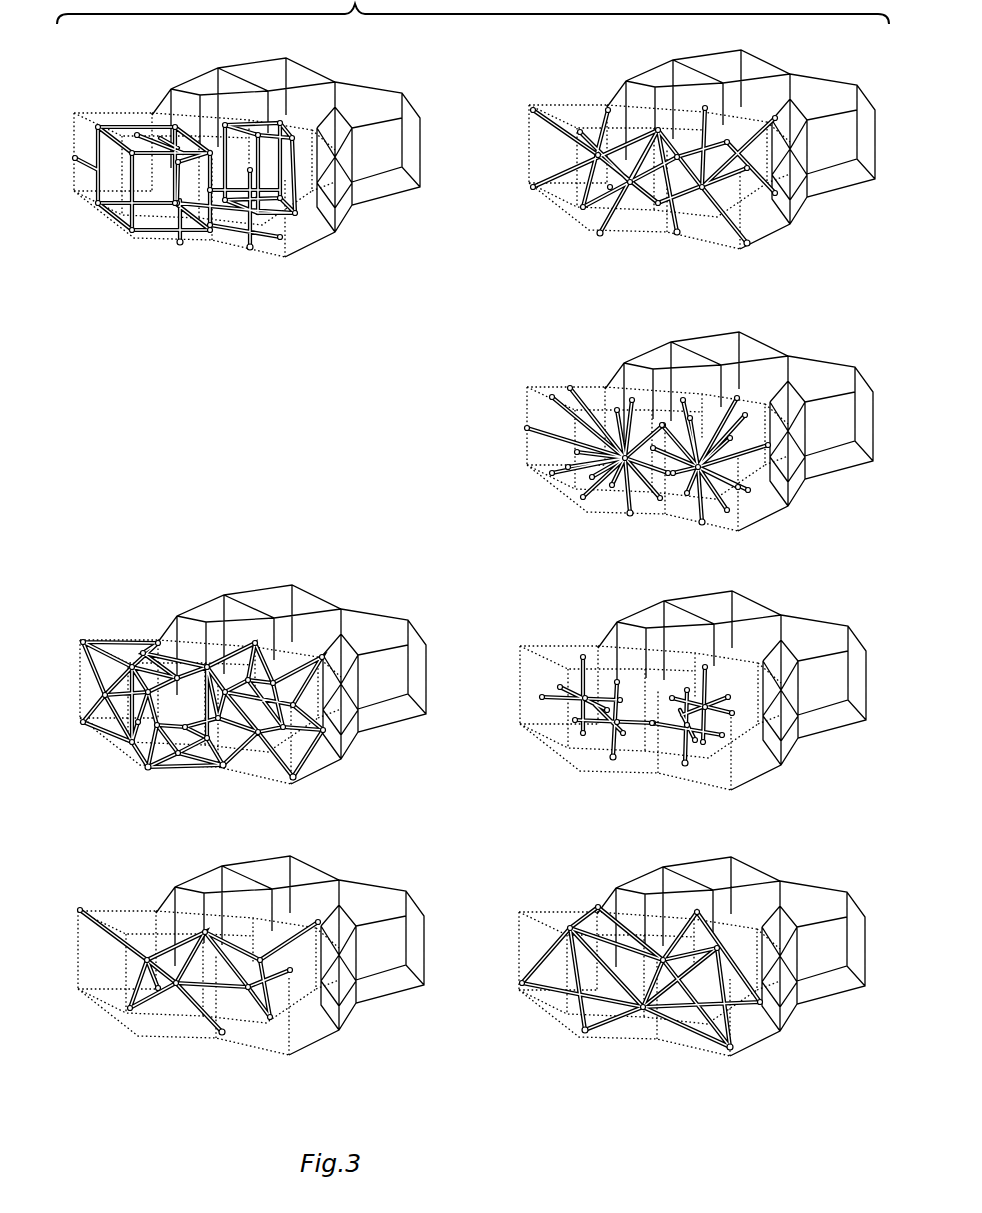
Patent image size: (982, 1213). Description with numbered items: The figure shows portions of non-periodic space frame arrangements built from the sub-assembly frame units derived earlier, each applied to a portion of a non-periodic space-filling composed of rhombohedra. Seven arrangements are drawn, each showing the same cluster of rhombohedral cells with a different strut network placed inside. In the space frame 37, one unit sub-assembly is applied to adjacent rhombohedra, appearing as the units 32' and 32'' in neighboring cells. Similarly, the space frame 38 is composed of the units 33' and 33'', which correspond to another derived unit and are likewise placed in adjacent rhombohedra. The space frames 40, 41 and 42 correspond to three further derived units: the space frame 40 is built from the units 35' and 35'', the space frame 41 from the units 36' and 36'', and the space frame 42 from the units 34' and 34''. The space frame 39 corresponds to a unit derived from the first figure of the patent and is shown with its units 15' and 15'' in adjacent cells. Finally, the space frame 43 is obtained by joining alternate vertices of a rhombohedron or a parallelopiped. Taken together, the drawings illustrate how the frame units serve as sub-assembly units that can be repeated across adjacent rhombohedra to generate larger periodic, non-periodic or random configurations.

The space frame 37 is at (232, 179).
The unit sub-assembly 32' is at (185, 153).
The unit sub-assembly 32'' is at (213, 247).
The space frame 40 is at (686, 182).
The unit sub-assembly 35' is at (654, 151).
The unit sub-assembly 35'' is at (673, 251).
The space frame 41 is at (681, 456).
The unit sub-assembly 36' is at (648, 430).
The unit sub-assembly 36'' is at (646, 535).
The space frame 38 is at (236, 714).
The unit sub-assembly 33' is at (203, 685).
The unit sub-assembly 33'' is at (220, 790).
The space frame 42 is at (674, 717).
The unit sub-assembly 34' is at (637, 685).
The unit sub-assembly 34'' is at (649, 785).
The space frame 39 is at (236, 977).
The unit sub-assembly 15' is at (199, 950).
The unit sub-assembly 15'' is at (211, 1046).
The space frame 43 is at (545, 1021).